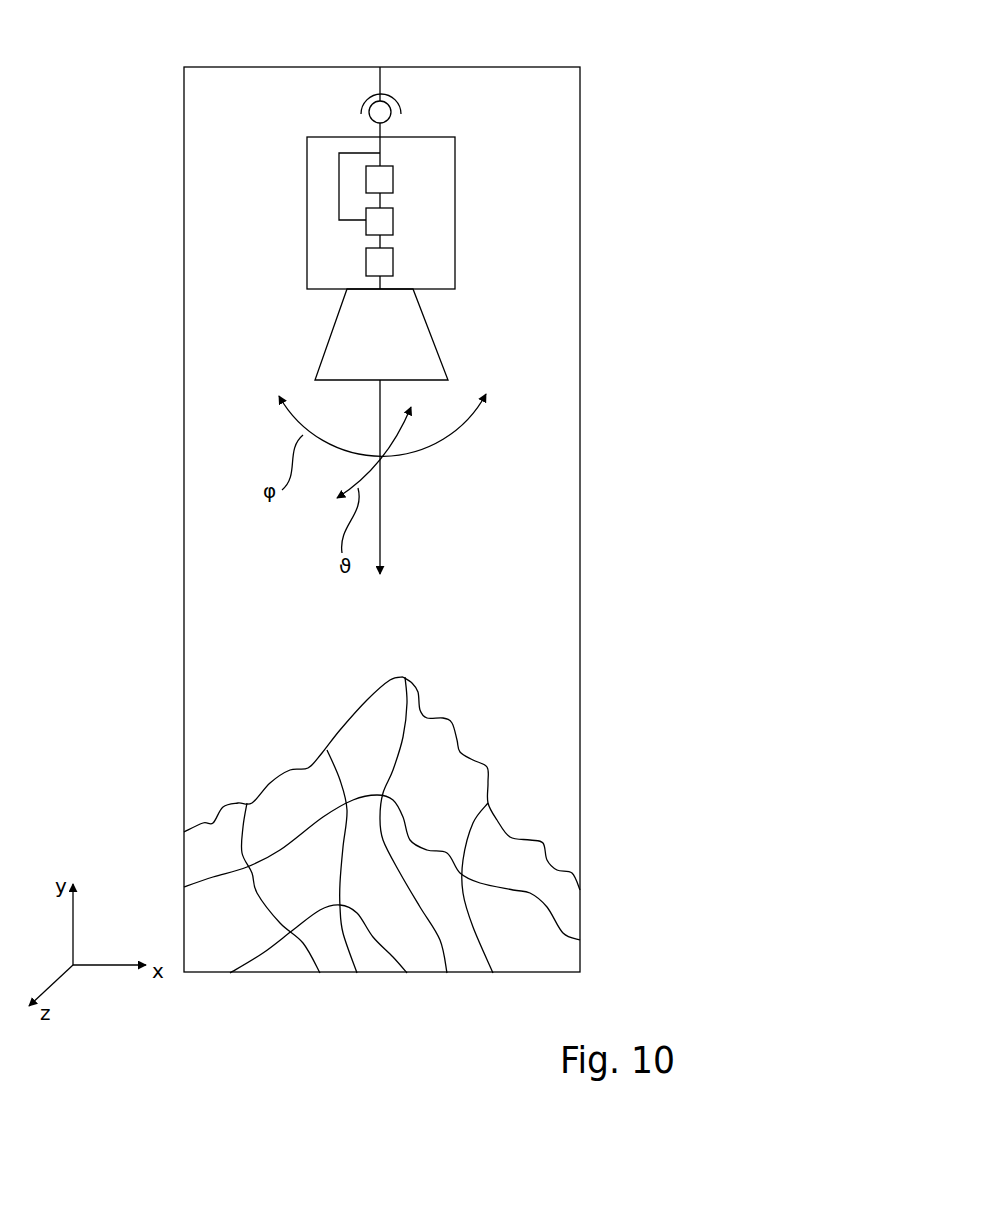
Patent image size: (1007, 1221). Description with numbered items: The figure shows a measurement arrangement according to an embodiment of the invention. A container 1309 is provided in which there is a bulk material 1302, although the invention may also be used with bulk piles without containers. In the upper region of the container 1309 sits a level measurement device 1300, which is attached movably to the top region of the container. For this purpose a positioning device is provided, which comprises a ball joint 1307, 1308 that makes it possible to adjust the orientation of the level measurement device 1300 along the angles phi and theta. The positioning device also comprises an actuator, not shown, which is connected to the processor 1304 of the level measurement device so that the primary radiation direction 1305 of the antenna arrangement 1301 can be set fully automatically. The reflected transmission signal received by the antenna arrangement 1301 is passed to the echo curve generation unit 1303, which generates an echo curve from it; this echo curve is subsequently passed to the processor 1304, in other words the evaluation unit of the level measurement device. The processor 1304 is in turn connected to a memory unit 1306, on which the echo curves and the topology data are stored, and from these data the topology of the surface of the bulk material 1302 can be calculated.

The level measurement device 1300 is at (455, 137).
The antenna arrangement 1301 is at (433, 340).
The bulk material 1302 is at (563, 910).
The echo curve generation unit 1303 is at (395, 262).
The processor 1304 is at (395, 220).
The primary radiation direction 1305 is at (385, 512).
The memory unit 1306 is at (395, 178).
The ball joint 1307 is at (373, 120).
The ball joint 1308 is at (402, 107).
The container 1309 is at (580, 570).